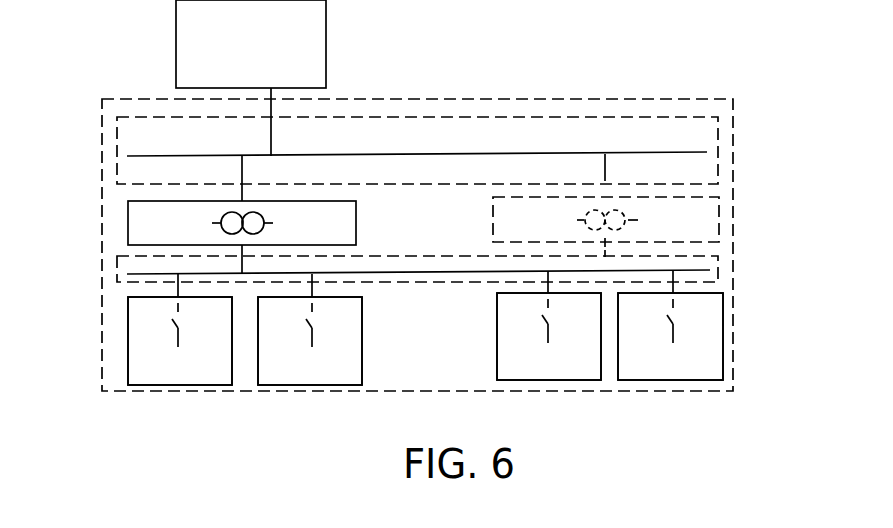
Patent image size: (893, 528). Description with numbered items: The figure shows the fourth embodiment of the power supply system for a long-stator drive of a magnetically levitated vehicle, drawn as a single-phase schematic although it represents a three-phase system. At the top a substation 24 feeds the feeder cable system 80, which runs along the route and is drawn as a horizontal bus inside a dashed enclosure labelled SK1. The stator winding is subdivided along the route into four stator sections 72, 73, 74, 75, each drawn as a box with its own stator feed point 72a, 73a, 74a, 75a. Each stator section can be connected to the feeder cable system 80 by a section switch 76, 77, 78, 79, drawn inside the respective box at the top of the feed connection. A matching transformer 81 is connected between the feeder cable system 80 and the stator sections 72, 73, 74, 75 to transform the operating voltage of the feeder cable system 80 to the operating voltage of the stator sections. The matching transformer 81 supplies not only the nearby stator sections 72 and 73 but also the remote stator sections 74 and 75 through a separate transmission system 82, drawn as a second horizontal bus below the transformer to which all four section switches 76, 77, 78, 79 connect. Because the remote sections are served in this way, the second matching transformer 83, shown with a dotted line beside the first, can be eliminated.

The substation 24 is at (307, 40).
The switchgear cabinet SK1 is at (417, 150).
The feeder cable system 80 is at (375, 155).
The matching transformer 81 is at (337, 215).
The separate transmission system 82 is at (390, 272).
The matching transformer 83 is at (508, 208).
The stator section 72 is at (193, 373).
The stator feed point 72a is at (142, 337).
The stator section 73 is at (312, 373).
The stator feed point 73a is at (337, 340).
The stator section 74 is at (553, 368).
The stator feed point 74a is at (532, 335).
The stator section 75 is at (688, 368).
The stator feed point 75a is at (713, 342).
The section switch 76 is at (182, 321).
The section switch 77 is at (316, 321).
The section switch 78 is at (552, 316).
The section switch 79 is at (677, 316).